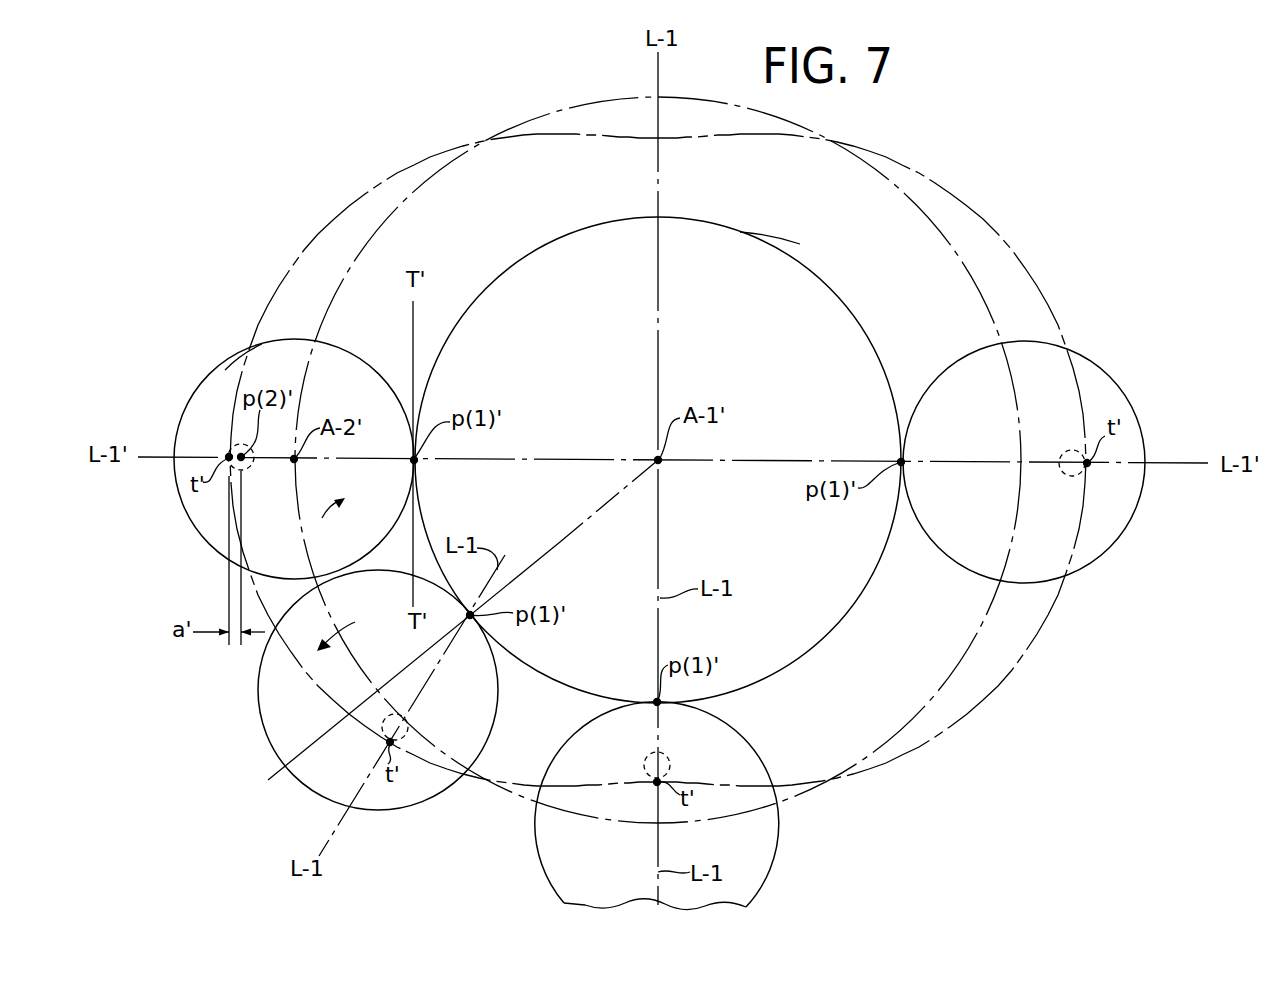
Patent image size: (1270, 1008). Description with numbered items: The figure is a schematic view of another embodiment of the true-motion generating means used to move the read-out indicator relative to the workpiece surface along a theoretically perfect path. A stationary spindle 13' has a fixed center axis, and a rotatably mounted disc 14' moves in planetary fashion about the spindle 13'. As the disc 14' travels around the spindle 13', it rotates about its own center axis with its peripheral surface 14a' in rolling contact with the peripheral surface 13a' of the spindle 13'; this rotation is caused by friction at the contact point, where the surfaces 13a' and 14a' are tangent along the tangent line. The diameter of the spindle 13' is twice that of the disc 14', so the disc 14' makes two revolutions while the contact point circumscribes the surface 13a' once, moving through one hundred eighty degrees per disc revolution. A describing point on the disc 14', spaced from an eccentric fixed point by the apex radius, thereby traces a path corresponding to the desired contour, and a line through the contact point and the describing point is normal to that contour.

The stationary spindle 13' is at (658, 460).
The peripheral surface of spindle 13a' is at (790, 227).
The rotatably mounted disc 14' is at (278, 459).
The peripheral surface of disc 14a' is at (230, 329).